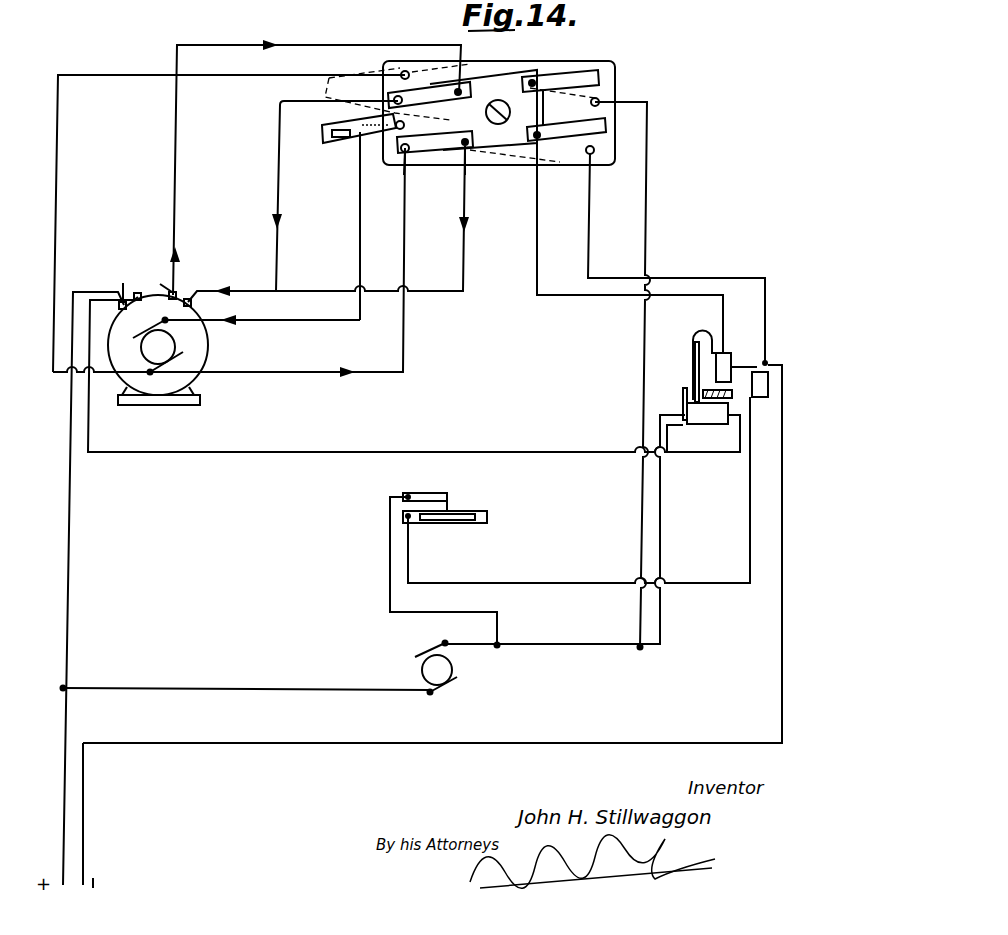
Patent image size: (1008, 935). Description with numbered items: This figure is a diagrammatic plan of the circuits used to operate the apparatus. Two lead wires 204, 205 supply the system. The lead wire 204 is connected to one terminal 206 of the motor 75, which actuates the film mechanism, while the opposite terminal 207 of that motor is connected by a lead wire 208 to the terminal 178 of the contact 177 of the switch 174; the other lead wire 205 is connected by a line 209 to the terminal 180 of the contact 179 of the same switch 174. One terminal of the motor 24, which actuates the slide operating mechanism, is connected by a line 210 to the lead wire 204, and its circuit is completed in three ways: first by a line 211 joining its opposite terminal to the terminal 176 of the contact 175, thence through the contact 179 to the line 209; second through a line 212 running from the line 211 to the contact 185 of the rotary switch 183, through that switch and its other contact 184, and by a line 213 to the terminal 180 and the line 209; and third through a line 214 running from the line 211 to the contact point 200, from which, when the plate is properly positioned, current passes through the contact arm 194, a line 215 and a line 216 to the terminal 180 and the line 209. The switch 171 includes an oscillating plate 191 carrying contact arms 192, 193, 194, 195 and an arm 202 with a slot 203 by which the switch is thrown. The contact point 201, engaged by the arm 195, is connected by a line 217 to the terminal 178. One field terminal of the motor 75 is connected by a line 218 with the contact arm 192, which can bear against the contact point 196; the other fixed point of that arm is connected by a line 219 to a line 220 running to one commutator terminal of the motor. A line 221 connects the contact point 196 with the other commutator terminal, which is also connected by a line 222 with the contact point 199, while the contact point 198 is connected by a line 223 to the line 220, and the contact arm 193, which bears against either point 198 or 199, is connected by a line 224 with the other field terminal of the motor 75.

The motor 24 is at (428, 669).
The motor 75 is at (195, 378).
The switch 171 is at (509, 66).
The switch 174 is at (716, 426).
The contact 175 is at (716, 419).
The terminal 176 is at (681, 415).
The contact 177 is at (717, 389).
The terminal 178 is at (766, 364).
The contact 179 is at (697, 345).
The terminal 180 is at (734, 356).
The rotary switch 183 is at (487, 517).
The contact 184 is at (455, 524).
The contact 185 is at (470, 483).
The plate 191 is at (460, 113).
The contact arm 192 is at (429, 95).
The contact arm 193 is at (435, 142).
The contact arm 194 is at (560, 81).
The contact arm 195 is at (566, 129).
The contact point 196 is at (406, 70).
The contact point 198 is at (387, 174).
The contact point 199 is at (440, 171).
The contact point 200 is at (600, 102).
The contact point 201 is at (595, 151).
The arm 202 is at (341, 130).
The slot 203 is at (352, 152).
The lead wire 204 is at (66, 588).
The lead wire 205 is at (86, 843).
The terminal 206 is at (156, 285).
The terminal 207 is at (121, 279).
The lead wire 208 is at (183, 456).
The line 209 is at (780, 700).
The line 210 is at (245, 682).
The line 211 is at (662, 555).
The line 212 is at (389, 589).
The line 213 is at (527, 584).
The line 214 is at (638, 403).
The line 215 is at (563, 107).
The line 216 is at (588, 297).
The line 217 is at (676, 258).
The line 218 is at (180, 238).
The line 219 is at (320, 196).
The line 220 is at (257, 324).
The line 221 is at (65, 214).
The line 222 is at (404, 270).
The line 223 is at (359, 256).
The line 224 is at (464, 255).